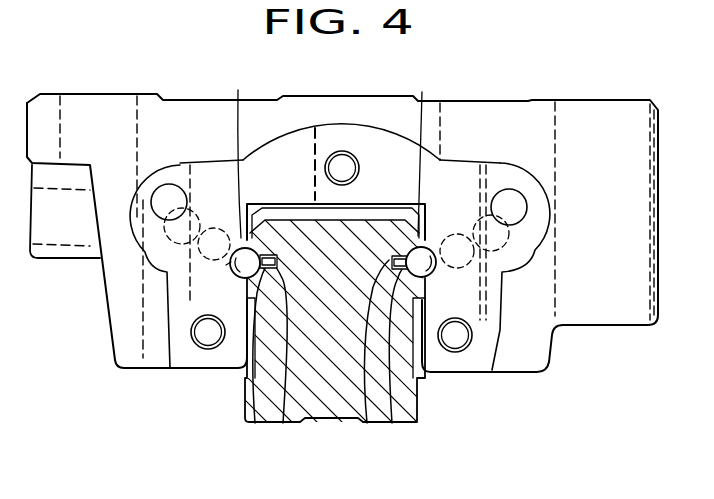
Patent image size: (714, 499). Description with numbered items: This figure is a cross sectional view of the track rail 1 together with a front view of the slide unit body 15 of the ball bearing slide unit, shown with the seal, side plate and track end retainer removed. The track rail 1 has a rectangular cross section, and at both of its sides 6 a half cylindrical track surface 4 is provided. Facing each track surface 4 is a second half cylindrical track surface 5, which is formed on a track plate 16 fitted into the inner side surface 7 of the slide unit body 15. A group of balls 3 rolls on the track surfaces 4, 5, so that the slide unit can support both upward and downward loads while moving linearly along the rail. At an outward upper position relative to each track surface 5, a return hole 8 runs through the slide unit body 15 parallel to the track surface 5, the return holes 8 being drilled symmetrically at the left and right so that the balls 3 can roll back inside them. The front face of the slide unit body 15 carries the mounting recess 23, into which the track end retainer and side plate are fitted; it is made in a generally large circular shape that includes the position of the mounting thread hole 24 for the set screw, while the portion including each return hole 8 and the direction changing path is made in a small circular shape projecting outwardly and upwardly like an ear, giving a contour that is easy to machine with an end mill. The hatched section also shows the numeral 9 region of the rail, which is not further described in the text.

The track rail 1 is at (323, 400).
The balls 3 is at (255, 424).
The track surface 4 is at (329, 152).
The track surface 5 is at (240, 280).
The sides 6 is at (247, 300).
The inner side surface 7 is at (247, 373).
The return hole 8 is at (168, 192).
The slots 9 is at (283, 424).
The slide unit body 15 is at (296, 121).
The track plate 16 is at (219, 225).
The mounting recess 23 is at (377, 132).
The mounting thread hole 24 is at (342, 150).